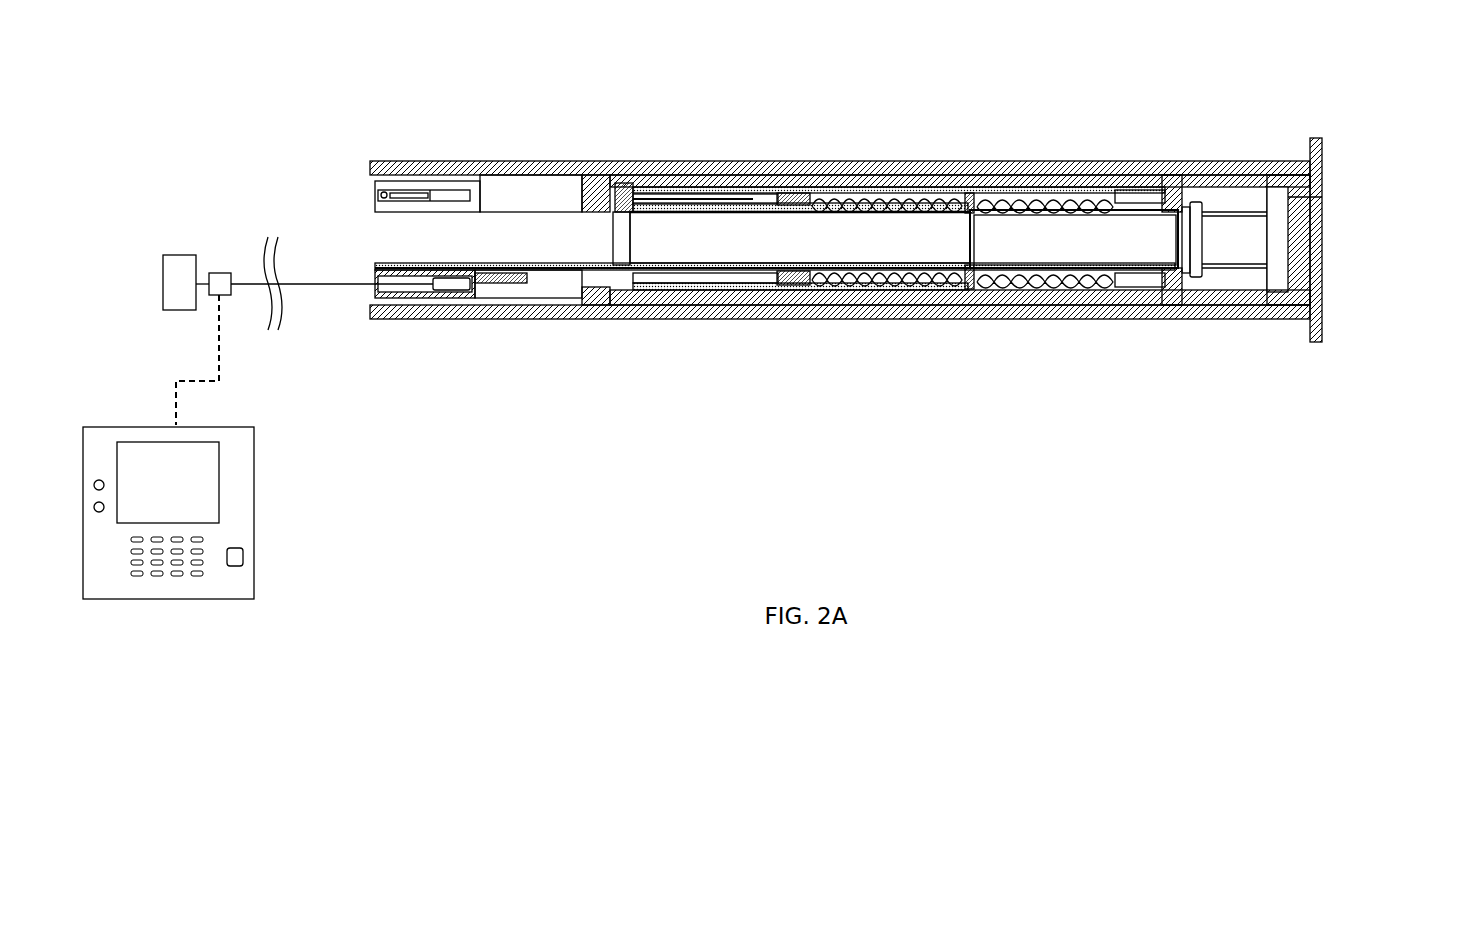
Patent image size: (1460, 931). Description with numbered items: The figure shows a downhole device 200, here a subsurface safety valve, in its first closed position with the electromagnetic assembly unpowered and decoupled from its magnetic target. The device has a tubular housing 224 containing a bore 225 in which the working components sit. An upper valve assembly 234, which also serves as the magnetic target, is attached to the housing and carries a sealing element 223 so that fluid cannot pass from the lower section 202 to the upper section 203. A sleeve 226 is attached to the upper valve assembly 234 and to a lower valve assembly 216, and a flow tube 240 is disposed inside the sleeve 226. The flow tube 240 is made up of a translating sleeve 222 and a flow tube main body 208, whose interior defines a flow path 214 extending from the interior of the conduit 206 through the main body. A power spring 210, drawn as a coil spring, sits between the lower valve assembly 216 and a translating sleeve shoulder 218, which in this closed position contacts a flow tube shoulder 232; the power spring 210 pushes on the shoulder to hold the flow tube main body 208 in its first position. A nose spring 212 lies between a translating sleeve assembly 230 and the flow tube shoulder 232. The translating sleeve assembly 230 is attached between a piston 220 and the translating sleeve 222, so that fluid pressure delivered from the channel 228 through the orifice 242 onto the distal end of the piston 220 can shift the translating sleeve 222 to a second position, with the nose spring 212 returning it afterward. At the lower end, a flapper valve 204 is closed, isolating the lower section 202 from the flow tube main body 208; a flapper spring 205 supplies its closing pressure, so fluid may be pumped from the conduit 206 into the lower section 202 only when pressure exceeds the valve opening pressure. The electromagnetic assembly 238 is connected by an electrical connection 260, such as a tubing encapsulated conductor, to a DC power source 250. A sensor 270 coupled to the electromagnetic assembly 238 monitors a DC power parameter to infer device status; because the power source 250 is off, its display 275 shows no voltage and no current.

The downhole device 200 is at (1358, 112).
The lower section 202 is at (1215, 262).
The upper section 203 is at (525, 185).
The valve 204 is at (1205, 235).
The flapper spring 205 is at (1195, 205).
The conduit 206 is at (475, 185).
The flow tube main body 208 is at (1015, 290).
The power spring 210 is at (1055, 195).
The nose spring 212 is at (855, 200).
The flow path 214 is at (735, 245).
The lower valve assembly 216 is at (1168, 185).
The translating sleeve shoulder 218 is at (972, 205).
The piston 220 is at (722, 200).
The translating sleeve 222 is at (952, 290).
The sealing element 223 is at (592, 305).
The tubular housing 224 is at (775, 165).
The bore 225 is at (548, 180).
The sleeve 226 is at (830, 180).
The channel 228 is at (800, 192).
The translating sleeve assembly 230 is at (785, 283).
The flow tube shoulder 232 is at (958, 200).
The upper valve assembly 234 is at (598, 180).
The electromagnetic assembly 238 is at (452, 293).
The flow tube 240 is at (811, 318).
The orifice 242 is at (640, 178).
The power source 250 is at (178, 255).
The electrical connection 260 is at (360, 286).
The sensor 270 is at (254, 505).
The display 275 is at (219, 470).